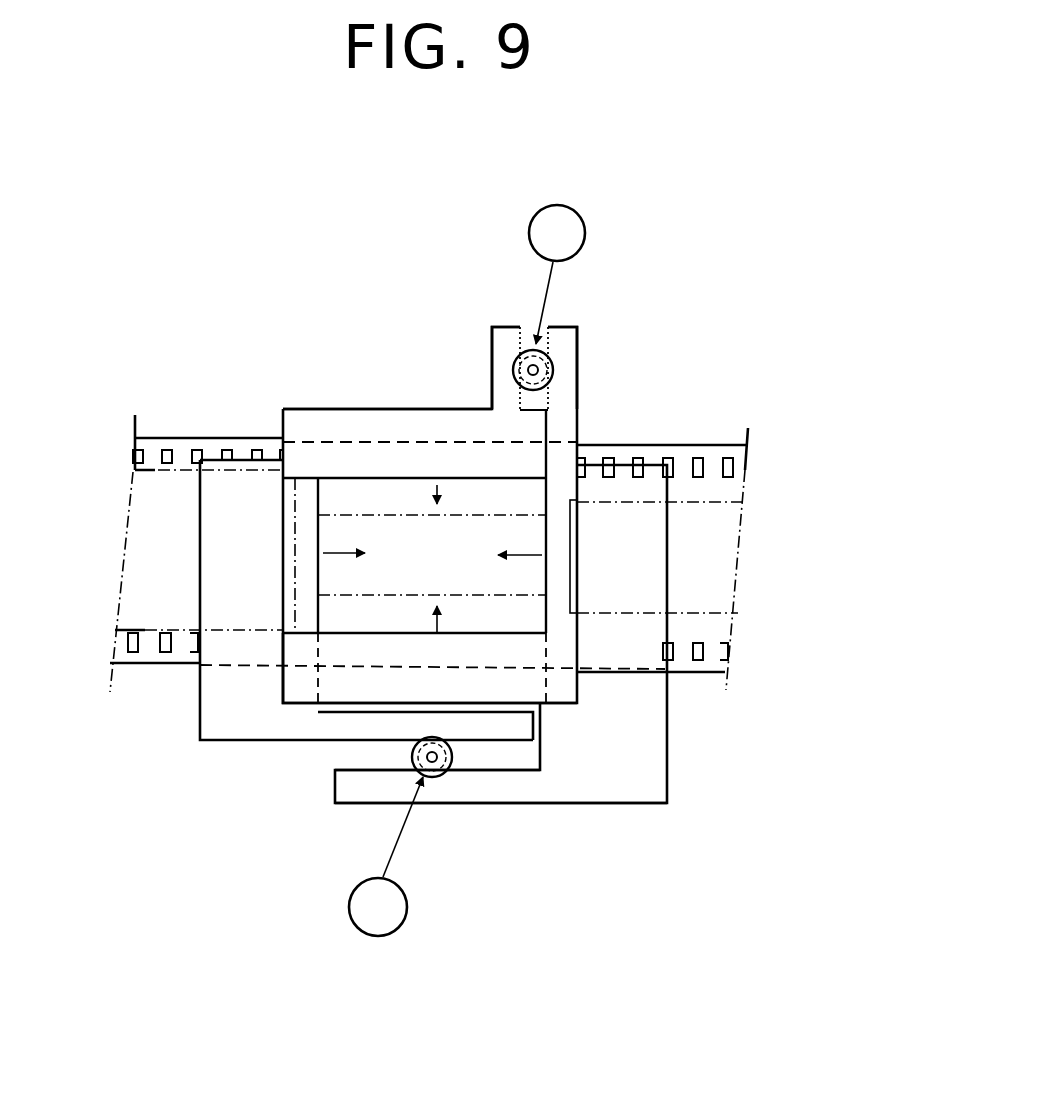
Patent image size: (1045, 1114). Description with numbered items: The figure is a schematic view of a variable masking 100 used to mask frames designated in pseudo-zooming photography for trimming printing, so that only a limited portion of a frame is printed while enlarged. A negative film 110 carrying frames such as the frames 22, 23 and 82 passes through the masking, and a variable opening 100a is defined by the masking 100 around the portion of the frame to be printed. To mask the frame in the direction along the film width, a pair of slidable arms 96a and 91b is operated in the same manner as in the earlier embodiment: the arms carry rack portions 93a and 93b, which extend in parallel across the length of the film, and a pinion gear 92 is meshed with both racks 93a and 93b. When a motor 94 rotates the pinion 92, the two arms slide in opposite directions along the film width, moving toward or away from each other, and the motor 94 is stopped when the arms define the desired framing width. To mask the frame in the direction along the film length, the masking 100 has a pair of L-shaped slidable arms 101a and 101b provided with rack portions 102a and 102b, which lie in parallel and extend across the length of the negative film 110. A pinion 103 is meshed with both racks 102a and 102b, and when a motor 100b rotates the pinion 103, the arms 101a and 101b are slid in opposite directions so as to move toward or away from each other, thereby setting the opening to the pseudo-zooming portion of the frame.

The variable masking 100 is at (392, 265).
The film passage / guide opening 100a is at (412, 477).
The motor 100b is at (393, 918).
The motor 94 is at (580, 222).
The pinion gear 92 is at (530, 345).
The rack portion 93a is at (497, 347).
The rack portion 93b is at (565, 342).
The slidable arm 96a is at (391, 422).
The frame 82 is at (662, 523).
The frame 22 is at (152, 470).
The negative film 110 is at (240, 437).
The frame 23 is at (377, 515).
The L-shaped slidable arm 101a is at (203, 710).
The L-shaped slidable arm 101b is at (652, 767).
The L-shaped slidable arm 91b is at (300, 690).
The rack portion 102a is at (523, 727).
The rack portion 102b is at (518, 790).
The pinion 103 is at (443, 780).